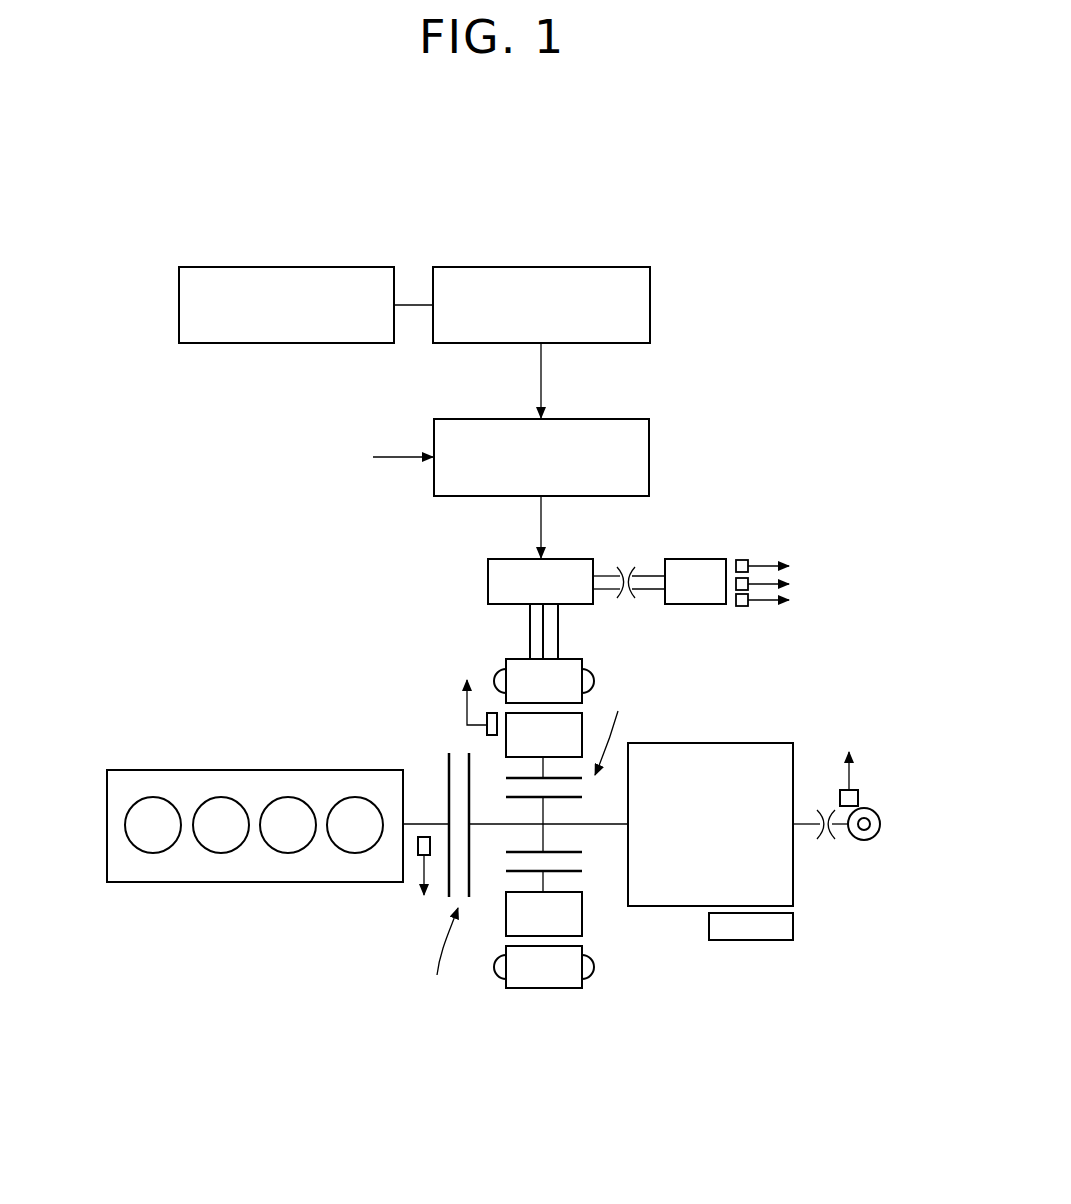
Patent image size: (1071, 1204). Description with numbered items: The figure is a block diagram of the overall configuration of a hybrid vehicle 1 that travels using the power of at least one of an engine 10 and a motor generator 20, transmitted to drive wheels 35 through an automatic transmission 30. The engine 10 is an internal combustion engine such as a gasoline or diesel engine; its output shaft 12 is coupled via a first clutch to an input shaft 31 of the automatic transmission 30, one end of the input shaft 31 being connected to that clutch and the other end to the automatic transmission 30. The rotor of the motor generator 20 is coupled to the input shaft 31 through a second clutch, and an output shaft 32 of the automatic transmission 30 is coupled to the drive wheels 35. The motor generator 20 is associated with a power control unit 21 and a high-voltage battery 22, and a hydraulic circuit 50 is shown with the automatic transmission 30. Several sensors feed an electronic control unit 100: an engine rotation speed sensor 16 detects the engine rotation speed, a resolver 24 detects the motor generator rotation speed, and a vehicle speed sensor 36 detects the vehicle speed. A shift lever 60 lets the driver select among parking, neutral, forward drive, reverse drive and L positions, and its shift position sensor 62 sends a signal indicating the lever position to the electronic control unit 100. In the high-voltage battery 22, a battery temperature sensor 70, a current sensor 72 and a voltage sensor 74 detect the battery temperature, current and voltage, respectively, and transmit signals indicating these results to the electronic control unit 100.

The vehicle 1 is at (186, 412).
The engine 10 is at (192, 770).
The output shaft 12 is at (429, 823).
The engine rotation speed sensor 16 is at (418, 850).
The motor generator 20 is at (578, 659).
The power control unit 21 is at (488, 576).
The high-voltage battery 22 is at (697, 559).
The resolver 24 is at (487, 730).
The automatic transmission 30 is at (718, 743).
The input shaft 31 is at (478, 828).
The output shaft 32 is at (805, 822).
The drive wheels 35 is at (865, 840).
The vehicle speed sensor 36 is at (858, 791).
The hydraulic circuit 50 is at (753, 940).
The shift lever 60 is at (329, 267).
The shift position sensor 62 is at (585, 267).
The battery temperature sensor 70 is at (743, 560).
The current sensor 72 is at (736, 584).
The voltage sensor 74 is at (743, 606).
The electronic control unit 100 is at (591, 419).